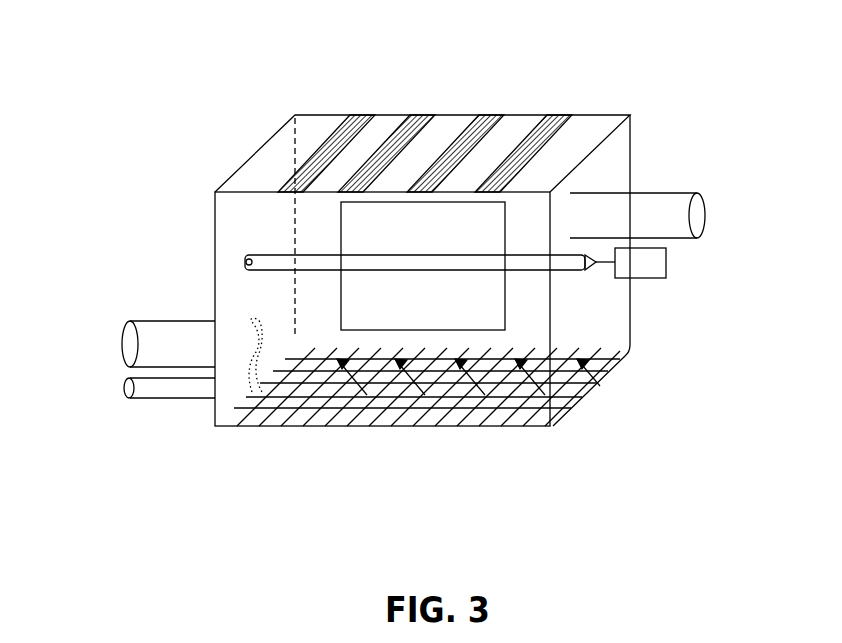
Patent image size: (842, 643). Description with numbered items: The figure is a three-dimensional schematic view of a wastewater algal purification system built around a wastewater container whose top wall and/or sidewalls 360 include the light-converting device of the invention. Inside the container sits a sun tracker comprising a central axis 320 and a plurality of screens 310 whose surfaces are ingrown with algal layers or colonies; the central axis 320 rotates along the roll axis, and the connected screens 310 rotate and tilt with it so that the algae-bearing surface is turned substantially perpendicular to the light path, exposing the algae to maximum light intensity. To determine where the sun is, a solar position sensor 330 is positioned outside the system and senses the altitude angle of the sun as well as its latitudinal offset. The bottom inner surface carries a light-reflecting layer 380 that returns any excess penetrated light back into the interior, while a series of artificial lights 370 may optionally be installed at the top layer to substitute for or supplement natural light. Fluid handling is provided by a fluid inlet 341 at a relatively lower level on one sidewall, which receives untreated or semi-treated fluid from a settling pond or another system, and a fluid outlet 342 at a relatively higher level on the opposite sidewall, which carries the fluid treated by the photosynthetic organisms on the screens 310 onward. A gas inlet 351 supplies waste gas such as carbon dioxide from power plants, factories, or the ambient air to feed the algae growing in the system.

The screens 310 is at (423, 266).
The central axis 320 is at (243, 261).
The solar position sensor 330 is at (666, 265).
The fluid inlet 341 is at (122, 344).
The fluid outlet 342 is at (706, 213).
The gas inlet 351 is at (124, 388).
The sidewalls 360 is at (276, 147).
The artificial lights 370 is at (498, 122).
The light-reflecting layer 380 is at (452, 410).